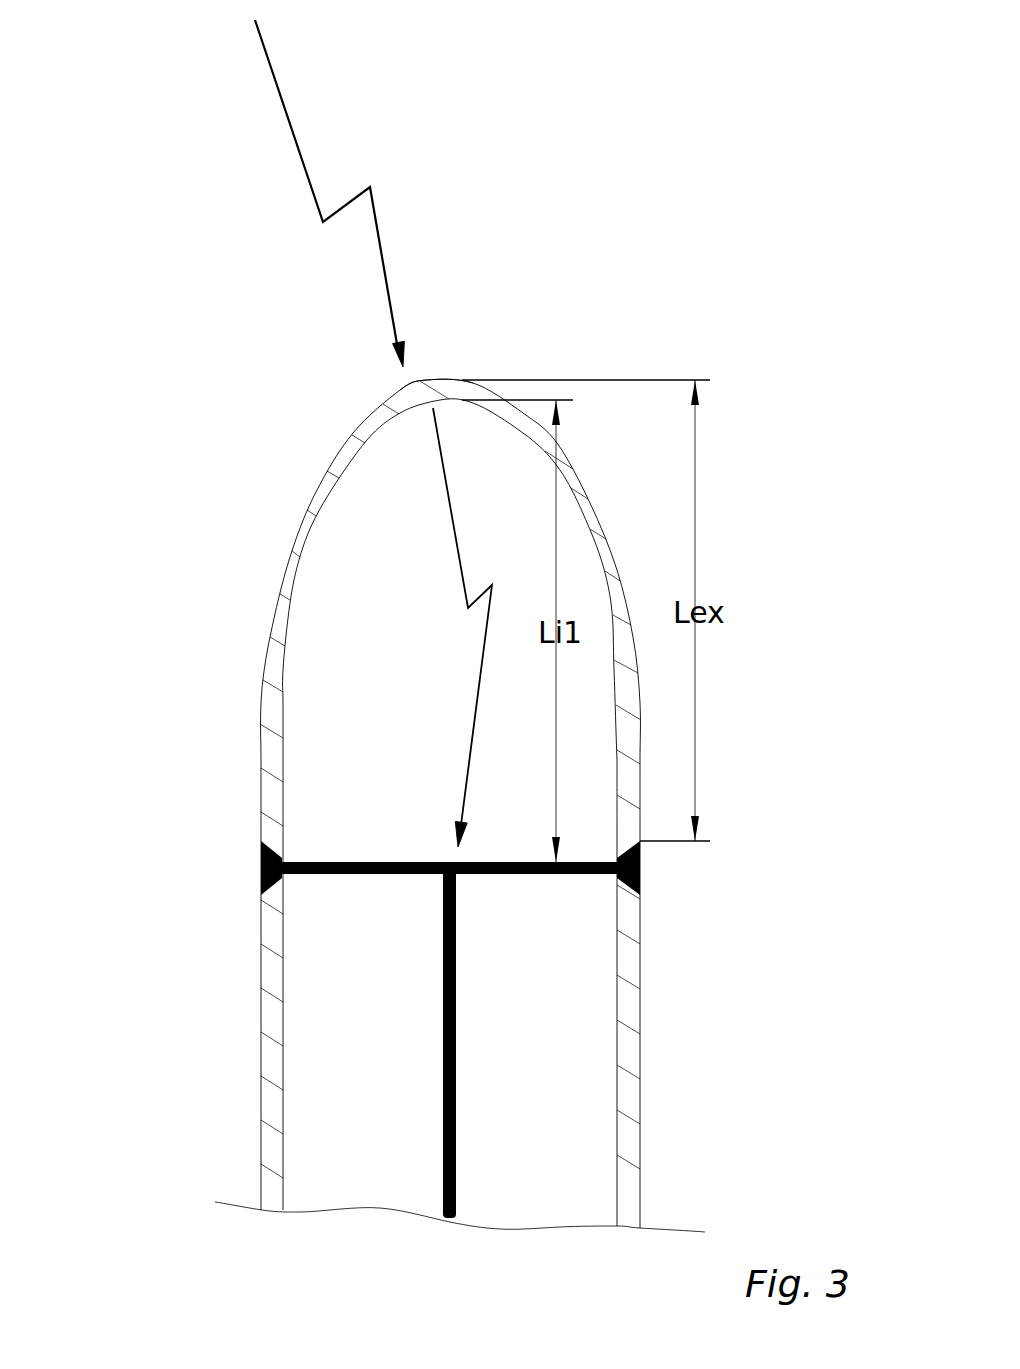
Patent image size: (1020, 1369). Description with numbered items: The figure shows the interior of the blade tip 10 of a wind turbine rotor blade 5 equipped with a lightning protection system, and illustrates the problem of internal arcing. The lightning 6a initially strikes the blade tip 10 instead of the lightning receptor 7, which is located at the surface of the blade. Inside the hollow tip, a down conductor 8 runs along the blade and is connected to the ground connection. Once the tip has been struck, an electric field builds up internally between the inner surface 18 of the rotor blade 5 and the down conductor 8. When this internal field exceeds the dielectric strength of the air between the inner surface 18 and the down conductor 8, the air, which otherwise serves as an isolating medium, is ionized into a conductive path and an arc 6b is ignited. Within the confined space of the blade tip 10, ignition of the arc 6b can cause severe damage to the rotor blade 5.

The rotor blade 5 is at (160, 1228).
The lightning 6a is at (313, 198).
The arc 6b is at (465, 598).
The lightning receptor 7 is at (260, 868).
The down conductor 8 is at (456, 1053).
The blade tip 10 is at (313, 520).
The inner surface 18 is at (388, 432).